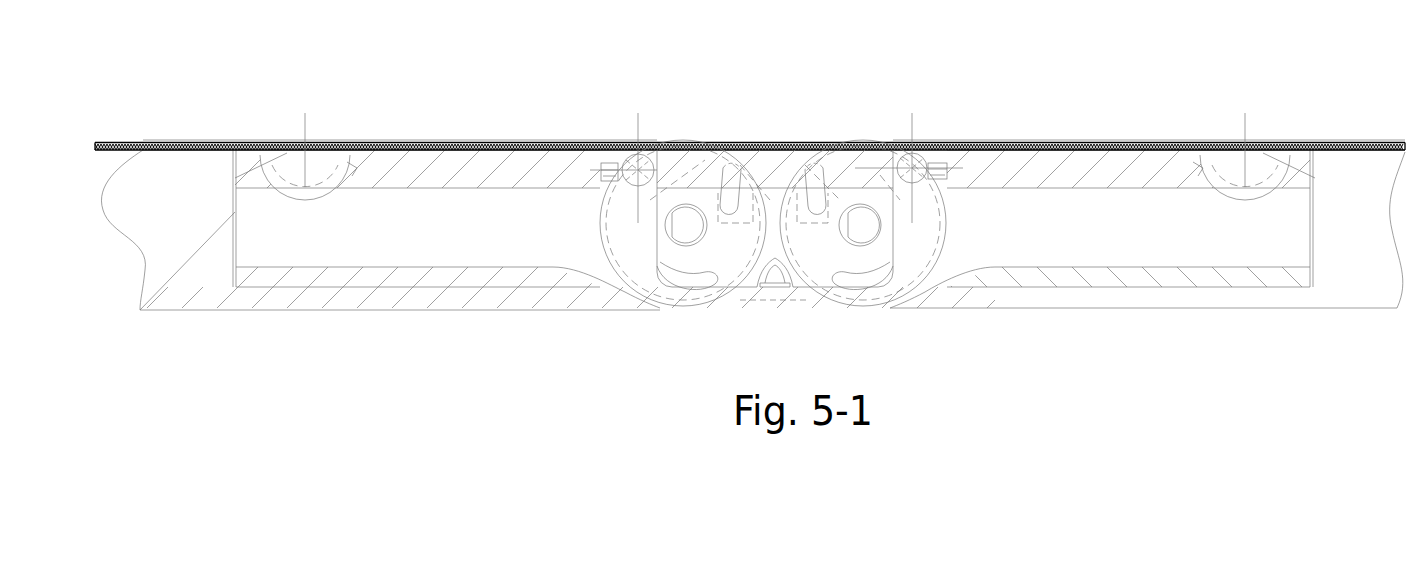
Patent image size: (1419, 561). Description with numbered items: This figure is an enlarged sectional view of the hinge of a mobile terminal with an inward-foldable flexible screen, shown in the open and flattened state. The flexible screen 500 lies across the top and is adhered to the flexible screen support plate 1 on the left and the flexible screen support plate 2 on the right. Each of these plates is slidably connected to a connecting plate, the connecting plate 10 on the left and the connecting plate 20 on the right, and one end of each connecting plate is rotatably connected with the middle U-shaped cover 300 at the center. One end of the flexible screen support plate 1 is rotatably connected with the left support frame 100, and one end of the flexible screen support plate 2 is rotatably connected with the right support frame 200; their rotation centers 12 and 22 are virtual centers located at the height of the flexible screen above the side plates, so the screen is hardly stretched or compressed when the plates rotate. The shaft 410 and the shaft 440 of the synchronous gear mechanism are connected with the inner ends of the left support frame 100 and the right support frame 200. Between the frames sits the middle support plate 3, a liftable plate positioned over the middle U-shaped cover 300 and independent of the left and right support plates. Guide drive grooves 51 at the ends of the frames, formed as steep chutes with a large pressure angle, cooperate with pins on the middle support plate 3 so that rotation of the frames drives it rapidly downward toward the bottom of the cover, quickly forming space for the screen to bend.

The flexible screen support plate 1 is at (398, 157).
The flexible screen support plate 2 is at (1118, 167).
The middle support plate 3 is at (802, 170).
The connecting plate 10 is at (610, 163).
The rotation center 12 is at (303, 145).
The connecting plate 20 is at (938, 160).
The rotation center 22 is at (1245, 148).
The guide drive groove 51 is at (806, 168).
The left support frame 100 is at (683, 258).
The right support frame 200 is at (845, 257).
The middle U-shaped cover 300 is at (760, 255).
The shaft 410 is at (650, 257).
The shaft 440 is at (917, 257).
The flexible screen 500 is at (472, 145).